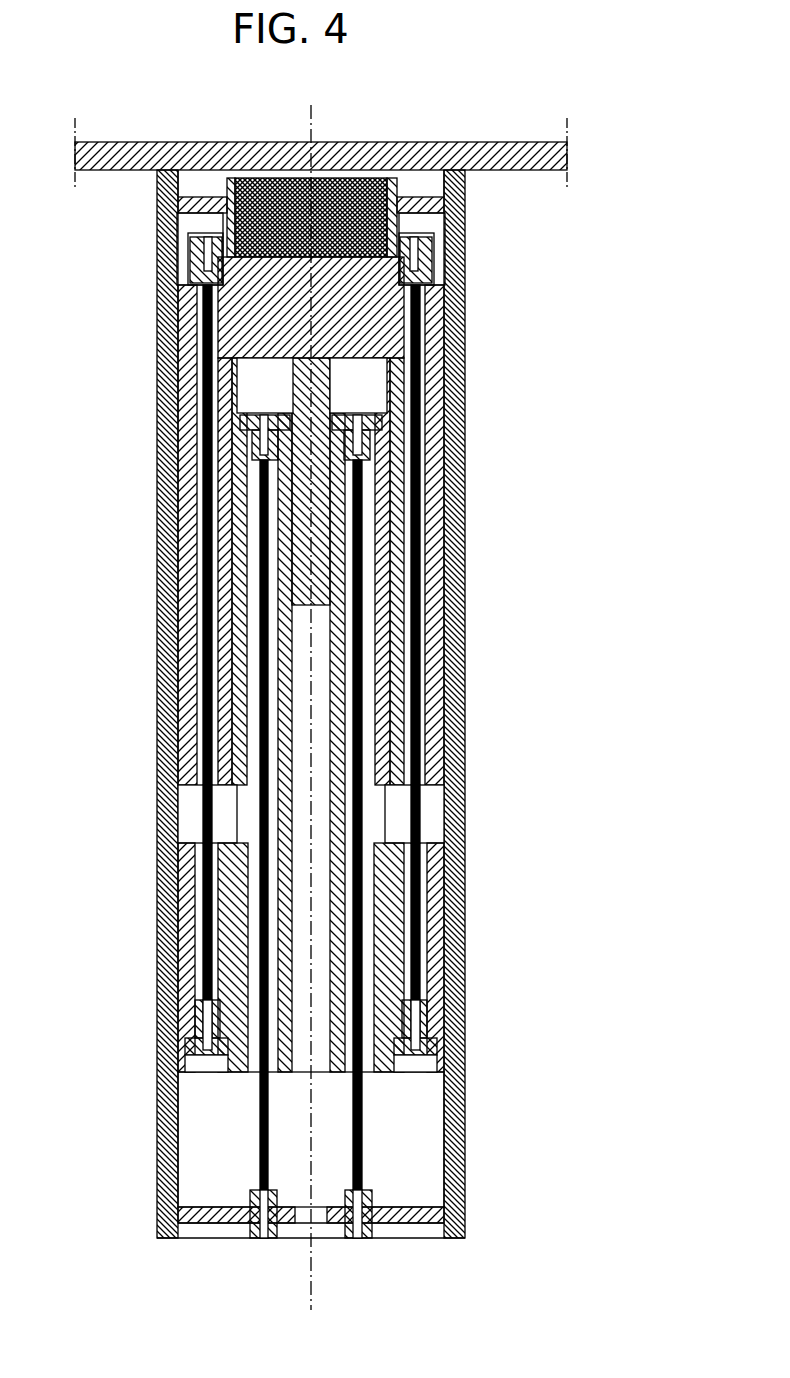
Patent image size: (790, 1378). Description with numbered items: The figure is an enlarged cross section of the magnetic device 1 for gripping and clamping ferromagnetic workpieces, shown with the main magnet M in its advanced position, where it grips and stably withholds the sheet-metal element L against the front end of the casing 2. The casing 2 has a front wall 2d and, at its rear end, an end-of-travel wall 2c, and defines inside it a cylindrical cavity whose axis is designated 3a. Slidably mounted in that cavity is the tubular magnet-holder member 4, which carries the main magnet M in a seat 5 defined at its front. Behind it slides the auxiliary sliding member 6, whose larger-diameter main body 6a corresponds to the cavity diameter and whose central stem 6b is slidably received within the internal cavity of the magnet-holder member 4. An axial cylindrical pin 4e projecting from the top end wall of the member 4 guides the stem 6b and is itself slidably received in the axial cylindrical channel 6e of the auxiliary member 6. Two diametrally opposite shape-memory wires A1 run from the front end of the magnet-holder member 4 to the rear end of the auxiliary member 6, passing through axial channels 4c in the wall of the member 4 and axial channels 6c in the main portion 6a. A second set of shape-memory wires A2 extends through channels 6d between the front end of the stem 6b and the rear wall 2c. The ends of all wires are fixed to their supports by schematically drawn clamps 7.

The magnetic device 1 is at (605, 360).
The casing 2 is at (155, 655).
The end-of-travel wall 2c is at (207, 1205).
The front wall 2d is at (425, 198).
The axis 3a is at (313, 1150).
The magnet-holder member 4 is at (230, 318).
The axial channels 4c is at (200, 545).
The axial cylindrical pin 4e is at (307, 540).
The seat 5 is at (238, 228).
The auxiliary sliding member 6 is at (235, 823).
The main body 6a is at (195, 880).
The central stem 6b is at (340, 765).
The axial channels 6c is at (415, 970).
The channels 6d is at (362, 865).
The axial cylindrical channel 6e is at (313, 712).
The clamps 7 is at (205, 228).
The first set of shape-memory wires A1 is at (210, 455).
The second set of shape-memory wires A2 is at (262, 1135).
The sheet-metal element L is at (140, 130).
The main magnet M is at (368, 177).